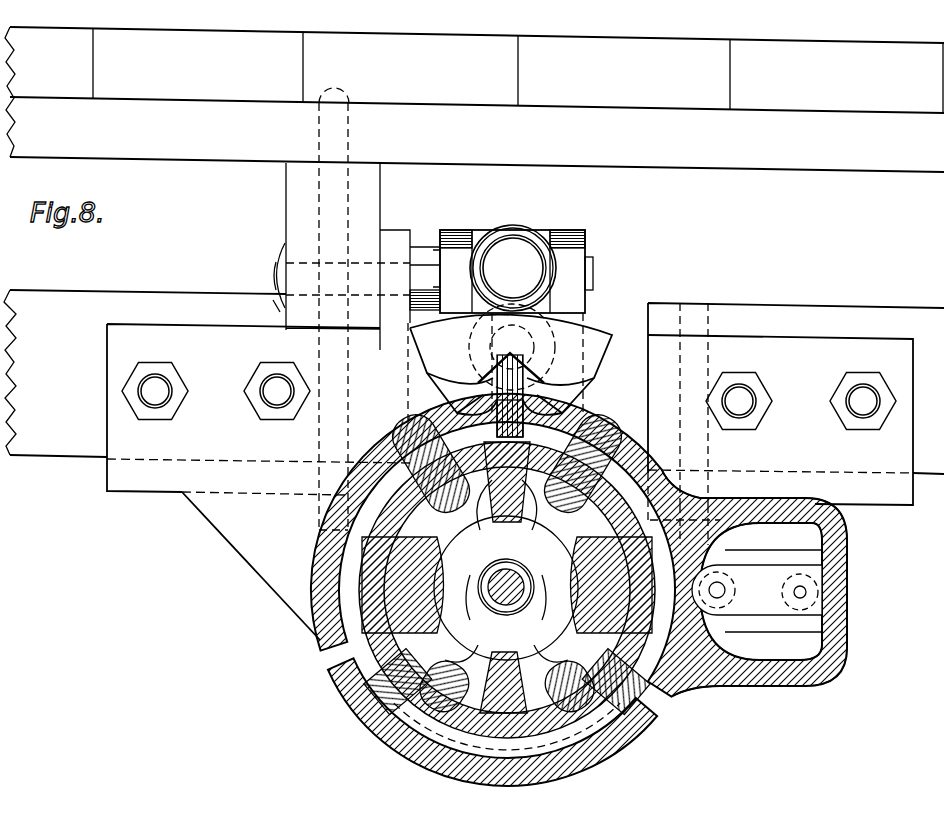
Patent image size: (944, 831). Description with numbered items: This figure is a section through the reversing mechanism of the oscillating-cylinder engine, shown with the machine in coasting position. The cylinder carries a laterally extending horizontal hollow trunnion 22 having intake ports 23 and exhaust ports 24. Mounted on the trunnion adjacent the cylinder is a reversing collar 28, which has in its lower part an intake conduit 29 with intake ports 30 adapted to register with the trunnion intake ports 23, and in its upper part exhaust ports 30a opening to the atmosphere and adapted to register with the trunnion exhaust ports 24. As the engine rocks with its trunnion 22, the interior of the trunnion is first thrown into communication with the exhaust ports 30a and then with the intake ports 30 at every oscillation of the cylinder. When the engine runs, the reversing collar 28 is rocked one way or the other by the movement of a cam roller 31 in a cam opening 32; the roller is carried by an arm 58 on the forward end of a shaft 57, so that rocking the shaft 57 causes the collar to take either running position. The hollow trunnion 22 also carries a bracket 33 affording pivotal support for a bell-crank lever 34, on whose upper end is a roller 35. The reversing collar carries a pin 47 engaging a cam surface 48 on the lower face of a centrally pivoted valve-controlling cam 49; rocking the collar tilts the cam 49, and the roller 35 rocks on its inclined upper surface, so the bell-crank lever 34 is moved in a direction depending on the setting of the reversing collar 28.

The hollow trunnion 22 is at (370, 596).
The intake ports 23 is at (512, 608).
The exhaust ports 24 is at (525, 515).
The reversing collar 28 is at (688, 673).
The intake conduit 29 is at (590, 743).
The intake ports 30 is at (360, 652).
The exhaust ports 30a is at (384, 446).
The cam roller 31 is at (723, 562).
The cam opening 32 is at (825, 532).
The bracket 33 is at (560, 231).
The bell-crank lever 34 is at (556, 297).
The roller 35 is at (543, 266).
The pin 47 is at (490, 392).
The cam surface 48 is at (527, 380).
The valve-controlling cam 49 is at (561, 331).
The shaft 57 is at (823, 595).
The arm 58 is at (767, 605).